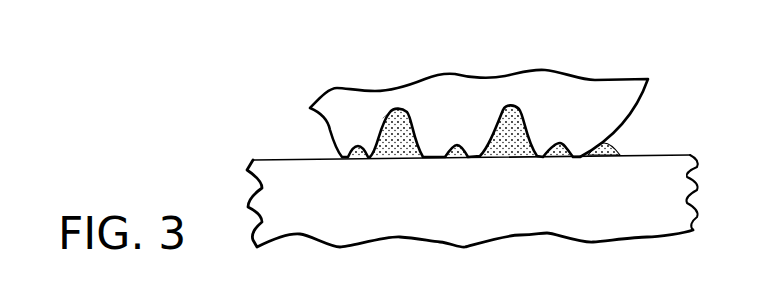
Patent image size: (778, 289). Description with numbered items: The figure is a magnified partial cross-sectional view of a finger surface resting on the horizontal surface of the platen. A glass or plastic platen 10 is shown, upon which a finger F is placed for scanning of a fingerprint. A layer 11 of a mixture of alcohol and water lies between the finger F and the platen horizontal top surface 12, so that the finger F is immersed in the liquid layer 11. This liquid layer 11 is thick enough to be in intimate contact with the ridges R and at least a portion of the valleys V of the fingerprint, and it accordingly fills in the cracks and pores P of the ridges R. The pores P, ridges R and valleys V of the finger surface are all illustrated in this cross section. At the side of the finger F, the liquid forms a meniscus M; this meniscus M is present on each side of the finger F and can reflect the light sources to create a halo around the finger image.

The platen 10 is at (448, 227).
The layer of liquid 11 is at (397, 142).
The platen horizontal top surface 12 is at (285, 159).
The pores P is at (357, 161).
The liquid meniscus M is at (617, 147).
The finger F is at (590, 87).
The valleys V is at (385, 119).
The ridges R is at (428, 153).